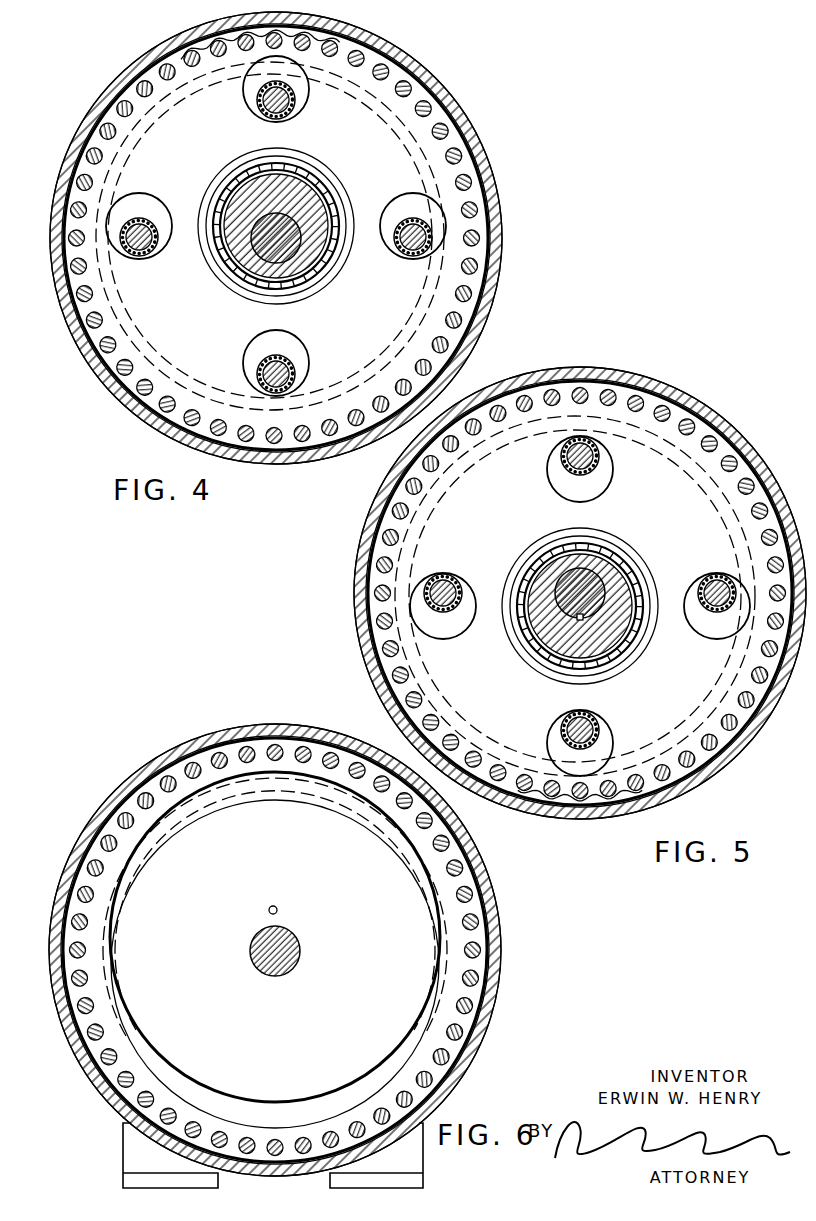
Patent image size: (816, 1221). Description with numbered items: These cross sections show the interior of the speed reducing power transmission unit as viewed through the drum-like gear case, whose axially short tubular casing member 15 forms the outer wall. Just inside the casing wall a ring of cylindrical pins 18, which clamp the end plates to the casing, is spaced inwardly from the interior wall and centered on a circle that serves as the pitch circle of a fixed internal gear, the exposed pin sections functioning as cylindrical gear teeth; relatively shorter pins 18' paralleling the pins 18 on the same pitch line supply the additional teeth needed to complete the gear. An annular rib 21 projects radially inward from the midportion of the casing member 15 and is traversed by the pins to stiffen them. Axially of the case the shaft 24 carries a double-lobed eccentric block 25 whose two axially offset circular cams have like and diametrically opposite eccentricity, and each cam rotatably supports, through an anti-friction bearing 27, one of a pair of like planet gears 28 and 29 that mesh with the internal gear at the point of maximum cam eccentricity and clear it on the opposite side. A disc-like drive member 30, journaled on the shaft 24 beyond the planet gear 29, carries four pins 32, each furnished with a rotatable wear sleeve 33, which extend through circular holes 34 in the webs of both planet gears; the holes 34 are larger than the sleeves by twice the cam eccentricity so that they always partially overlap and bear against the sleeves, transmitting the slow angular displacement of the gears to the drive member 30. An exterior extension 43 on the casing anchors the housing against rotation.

In FIG. 4, the tubular casing member 15 is at (470, 126).
In FIG. 5, the tubular casing member 15 is at (670, 386).
In FIG. 6, the tubular casing member 15 is at (219, 738).
In FIG. 4, the cylindrical pins 18 is at (283, 234).
In FIG. 5, the cylindrical pins 18 is at (562, 590).
In FIG. 6, the cylindrical pins 18 is at (269, 934).
In FIG. 4, the shorter pins 18' is at (291, 222).
In FIG. 5, the shorter pins 18' is at (605, 573).
In FIG. 6, the shorter pins 18' is at (291, 894).
In FIG. 6, the annular rib 21 is at (446, 888).
In FIG. 4, the shaft 24 is at (262, 250).
In FIG. 5, the shaft 24 is at (567, 580).
In FIG. 6, the shaft 24 is at (250, 950).
In FIG. 4, the double-lobed eccentric block 25 is at (250, 190).
In FIG. 5, the double-lobed eccentric block 25 is at (550, 643).
In FIG. 4, the anti-friction bearing 27 is at (315, 180).
In FIG. 5, the anti-friction bearing 27 is at (626, 567).
In FIG. 4, the planet gear 28 is at (272, 73).
In FIG. 5, the planet gear 29 is at (592, 641).
In FIG. 6, the disc-like drive member 30 is at (275, 964).
In FIG. 4, the pins 32 is at (268, 106).
In FIG. 5, the pins 32 is at (592, 458).
In FIG. 4, the wear sleeve 33 is at (260, 99).
In FIG. 5, the wear sleeve 33 is at (573, 474).
In FIG. 4, the circular holes 34 is at (309, 88).
In FIG. 5, the circular holes 34 is at (551, 485).
In FIG. 6, the exterior extension 43 is at (130, 1163).